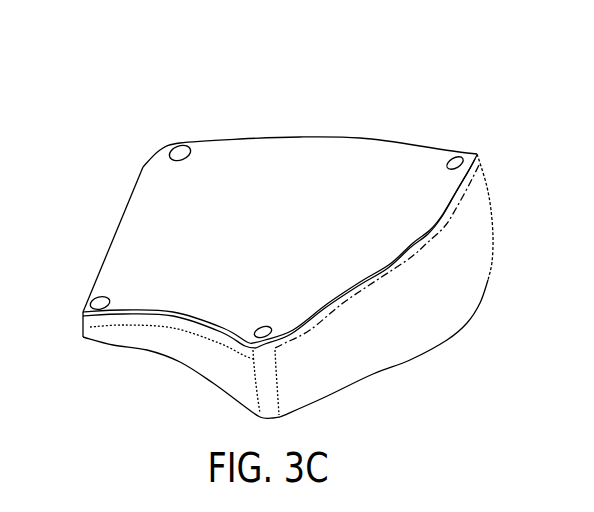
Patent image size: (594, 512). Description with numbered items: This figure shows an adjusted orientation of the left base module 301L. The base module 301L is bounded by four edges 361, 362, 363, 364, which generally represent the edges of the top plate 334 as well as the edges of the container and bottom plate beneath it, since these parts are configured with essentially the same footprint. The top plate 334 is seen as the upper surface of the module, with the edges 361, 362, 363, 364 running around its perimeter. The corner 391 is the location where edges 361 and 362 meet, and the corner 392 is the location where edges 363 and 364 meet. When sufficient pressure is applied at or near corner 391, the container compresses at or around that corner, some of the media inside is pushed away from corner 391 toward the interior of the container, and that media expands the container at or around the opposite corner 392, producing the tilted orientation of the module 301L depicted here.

The left base module 301L is at (257, 110).
The top plate 334 is at (238, 220).
The edge 361 is at (117, 232).
The edge 362 is at (168, 358).
The edge 363 is at (427, 352).
The edge 364 is at (358, 137).
The corner 391 is at (84, 336).
The corner 392 is at (477, 157).